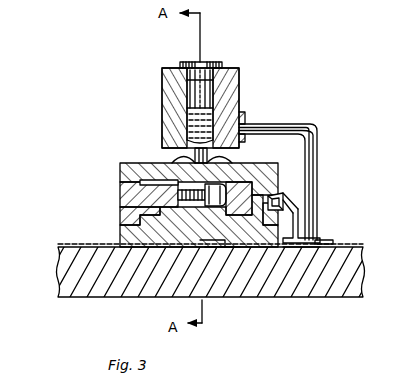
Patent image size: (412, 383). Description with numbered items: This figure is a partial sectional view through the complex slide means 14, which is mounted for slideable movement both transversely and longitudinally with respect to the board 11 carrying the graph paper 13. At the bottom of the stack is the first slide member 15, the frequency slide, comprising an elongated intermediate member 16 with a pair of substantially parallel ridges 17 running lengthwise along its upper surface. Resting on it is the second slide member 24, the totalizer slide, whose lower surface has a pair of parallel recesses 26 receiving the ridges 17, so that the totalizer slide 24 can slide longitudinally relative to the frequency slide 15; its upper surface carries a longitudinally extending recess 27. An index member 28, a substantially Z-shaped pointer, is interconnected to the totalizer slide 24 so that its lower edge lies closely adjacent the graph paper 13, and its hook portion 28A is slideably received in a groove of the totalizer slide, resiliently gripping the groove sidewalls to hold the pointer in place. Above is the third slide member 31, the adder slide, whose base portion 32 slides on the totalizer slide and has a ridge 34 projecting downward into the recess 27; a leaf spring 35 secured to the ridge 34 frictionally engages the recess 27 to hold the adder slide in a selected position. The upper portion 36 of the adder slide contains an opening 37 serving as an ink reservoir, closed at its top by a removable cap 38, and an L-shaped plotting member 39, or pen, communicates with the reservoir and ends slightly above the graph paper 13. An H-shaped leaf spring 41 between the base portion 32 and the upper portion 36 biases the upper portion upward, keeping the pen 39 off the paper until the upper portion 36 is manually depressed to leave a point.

The board 11 is at (264, 272).
The graph paper 13 is at (67, 246).
The slide means 14 is at (206, 135).
The first slide member 15 is at (293, 252).
The intermediate member 16 is at (125, 235).
The ridges 17 is at (218, 272).
The second slide member 24 is at (255, 189).
The recesses 26 is at (121, 214).
The recess 27 is at (120, 192).
The index member 28 is at (330, 241).
The hook portion 28A is at (286, 209).
The third slide member 31 is at (169, 89).
The base portion 32 is at (125, 172).
The ridge 34 is at (212, 235).
The leaf spring 35 is at (232, 215).
The upper portion 36 is at (167, 76).
The opening 37 is at (243, 84).
The removable cap 38 is at (204, 72).
The plotting member 39 is at (298, 224).
The spring 41 is at (170, 155).